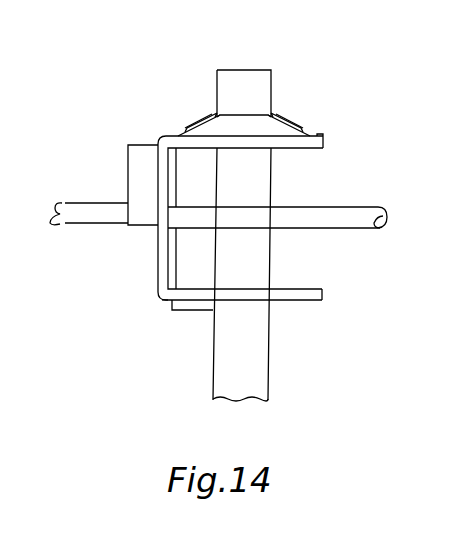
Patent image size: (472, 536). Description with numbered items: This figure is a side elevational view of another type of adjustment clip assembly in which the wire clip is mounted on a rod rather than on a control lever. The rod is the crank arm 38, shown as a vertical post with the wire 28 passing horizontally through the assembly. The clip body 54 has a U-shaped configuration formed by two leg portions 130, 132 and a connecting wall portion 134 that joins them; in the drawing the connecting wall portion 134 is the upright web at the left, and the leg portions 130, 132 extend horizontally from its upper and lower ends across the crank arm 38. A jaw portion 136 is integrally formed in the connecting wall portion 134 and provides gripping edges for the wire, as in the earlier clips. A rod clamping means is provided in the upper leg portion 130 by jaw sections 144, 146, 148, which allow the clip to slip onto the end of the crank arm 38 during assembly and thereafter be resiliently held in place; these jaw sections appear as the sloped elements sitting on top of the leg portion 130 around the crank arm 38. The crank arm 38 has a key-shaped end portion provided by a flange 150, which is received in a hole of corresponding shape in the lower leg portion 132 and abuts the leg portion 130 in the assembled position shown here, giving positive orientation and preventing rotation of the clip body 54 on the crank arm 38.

The rod 28 is at (359, 205).
The crank arm 38 is at (273, 380).
The clip body 54 is at (167, 301).
The leg portion 130 is at (320, 136).
The leg portion 132 is at (300, 297).
The connecting wall portion 134 is at (158, 258).
The jaw portion 136 is at (141, 173).
The jaw section 144 is at (202, 124).
The jaw section 146 is at (243, 130).
The jaw section 148 is at (288, 118).
The flange 150 is at (203, 312).